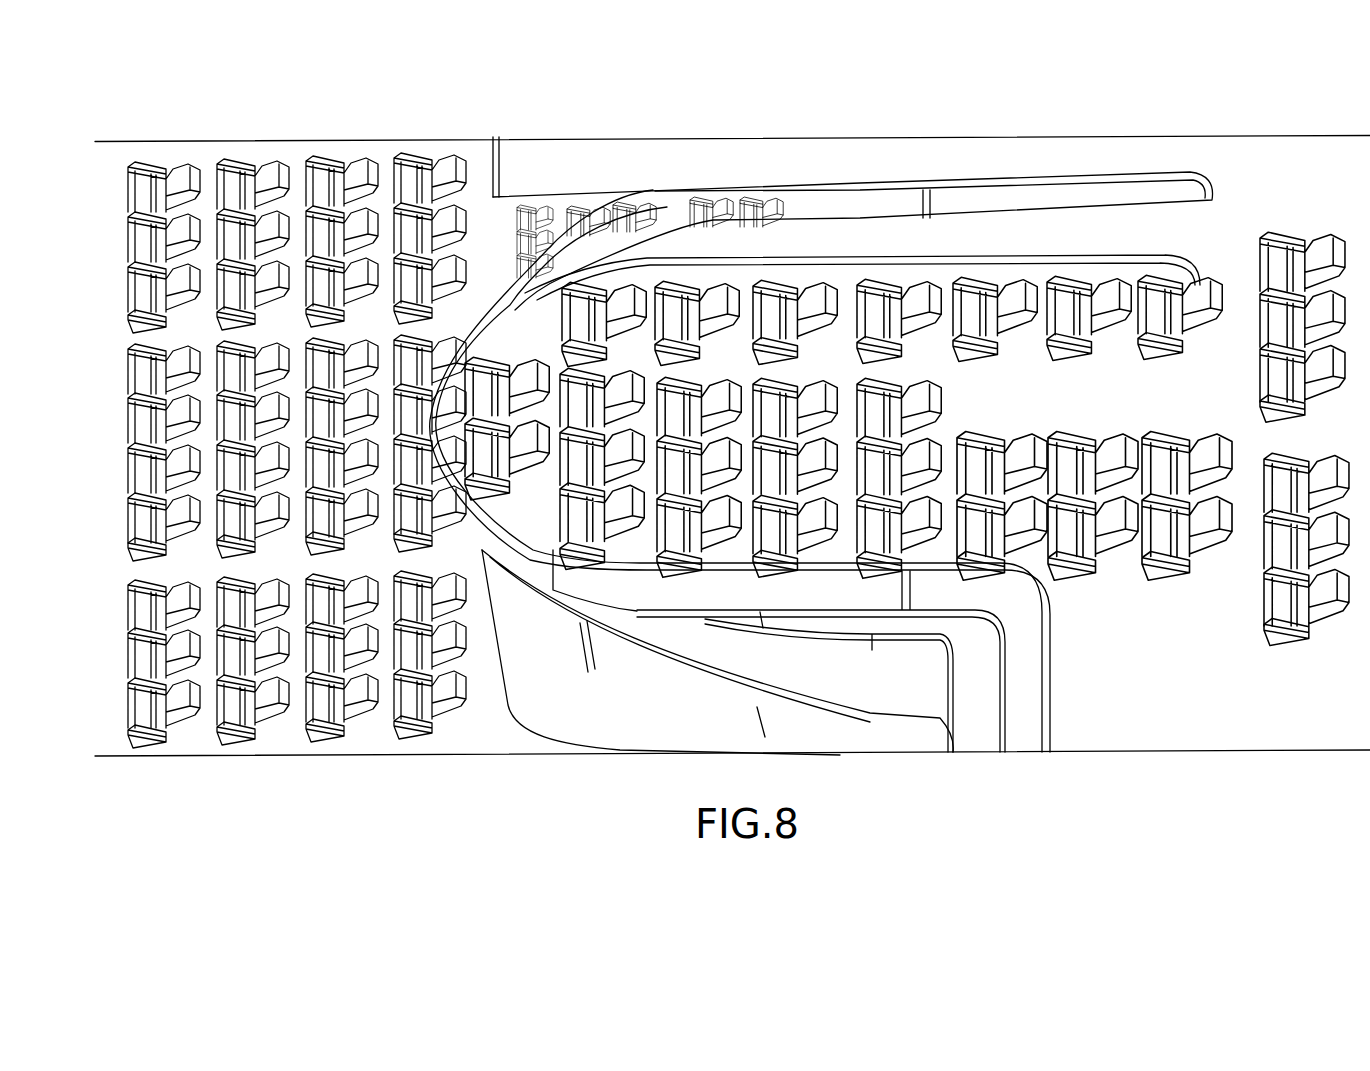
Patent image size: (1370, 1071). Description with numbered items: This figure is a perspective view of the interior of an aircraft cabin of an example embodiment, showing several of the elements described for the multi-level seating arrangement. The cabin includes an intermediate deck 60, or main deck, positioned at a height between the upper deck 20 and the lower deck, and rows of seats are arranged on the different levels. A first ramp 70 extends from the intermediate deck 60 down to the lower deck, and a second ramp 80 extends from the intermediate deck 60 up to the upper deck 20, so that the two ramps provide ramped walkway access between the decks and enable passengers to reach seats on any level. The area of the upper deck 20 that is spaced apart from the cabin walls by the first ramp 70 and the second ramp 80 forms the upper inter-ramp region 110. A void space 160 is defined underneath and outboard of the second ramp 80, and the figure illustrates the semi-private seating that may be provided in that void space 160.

The upper deck 20 is at (1257, 190).
The intermediate deck 60 is at (190, 338).
The first ramp 70 is at (813, 685).
The second ramp 80 is at (993, 245).
The upper inter-ramp region 110 is at (828, 366).
The void space 160 is at (678, 217).